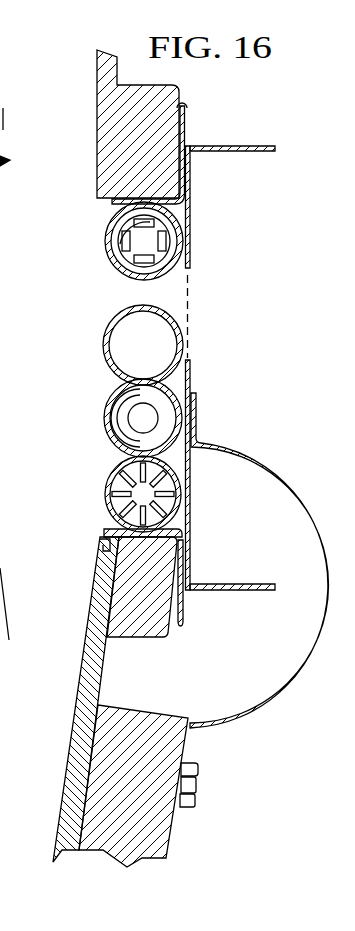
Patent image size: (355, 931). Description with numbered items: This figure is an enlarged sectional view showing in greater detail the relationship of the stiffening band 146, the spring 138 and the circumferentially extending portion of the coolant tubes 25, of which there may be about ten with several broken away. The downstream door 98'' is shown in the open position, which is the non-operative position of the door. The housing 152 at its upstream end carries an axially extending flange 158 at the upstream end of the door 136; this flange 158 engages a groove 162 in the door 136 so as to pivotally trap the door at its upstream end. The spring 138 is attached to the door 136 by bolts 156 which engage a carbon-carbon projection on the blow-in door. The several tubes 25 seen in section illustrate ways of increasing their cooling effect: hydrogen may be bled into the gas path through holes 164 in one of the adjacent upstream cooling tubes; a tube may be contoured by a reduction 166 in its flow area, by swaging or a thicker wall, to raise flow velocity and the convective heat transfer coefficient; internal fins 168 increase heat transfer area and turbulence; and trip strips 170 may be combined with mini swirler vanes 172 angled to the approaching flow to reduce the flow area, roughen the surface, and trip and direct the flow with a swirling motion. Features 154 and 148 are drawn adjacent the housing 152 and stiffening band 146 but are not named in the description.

The downstream door 98'' is at (94, 458).
The seal lip 154 is at (185, 96).
The housing 152 is at (188, 127).
The mounting flange 148 is at (228, 152).
The stiffening band 146 is at (200, 220).
The trip strips 170 is at (110, 250).
The mini swirler vanes 172 is at (128, 246).
The tubes 25 is at (95, 342).
The reduction 166 is at (118, 400).
The holes 164 is at (110, 505).
The internal fins 168 is at (118, 484).
The axially extending flange 158 is at (100, 544).
The groove 162 is at (100, 551).
The door 136 is at (160, 641).
The spring 138 is at (270, 466).
The bolts 156 is at (200, 788).